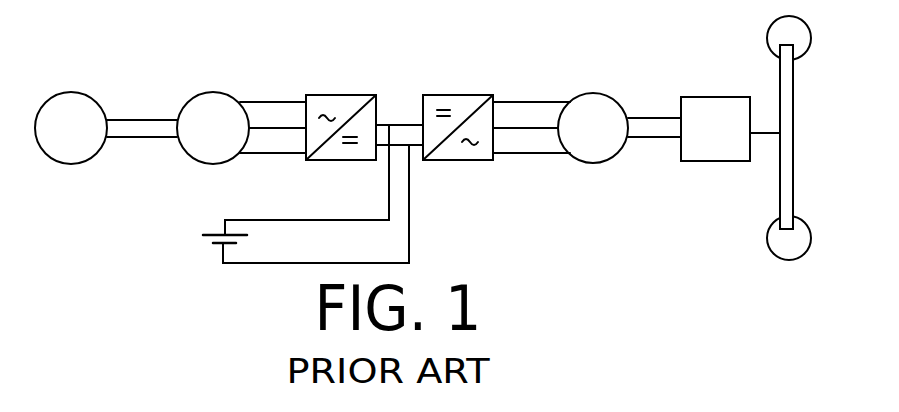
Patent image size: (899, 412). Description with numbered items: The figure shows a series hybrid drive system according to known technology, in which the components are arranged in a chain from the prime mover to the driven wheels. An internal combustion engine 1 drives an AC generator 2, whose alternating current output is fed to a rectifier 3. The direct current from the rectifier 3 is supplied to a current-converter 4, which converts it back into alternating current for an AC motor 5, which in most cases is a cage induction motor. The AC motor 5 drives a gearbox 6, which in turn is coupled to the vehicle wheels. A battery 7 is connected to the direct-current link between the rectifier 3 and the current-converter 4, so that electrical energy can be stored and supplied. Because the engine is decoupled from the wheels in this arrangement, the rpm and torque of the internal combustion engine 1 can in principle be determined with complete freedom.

The internal combustion engine 1 is at (80, 92).
The AC generator 2 is at (220, 92).
The rectifier 3 is at (340, 95).
The current-converter 4 is at (470, 95).
The AC motor 5 is at (574, 96).
The gearbox 6 is at (723, 97).
The battery 7 is at (212, 233).